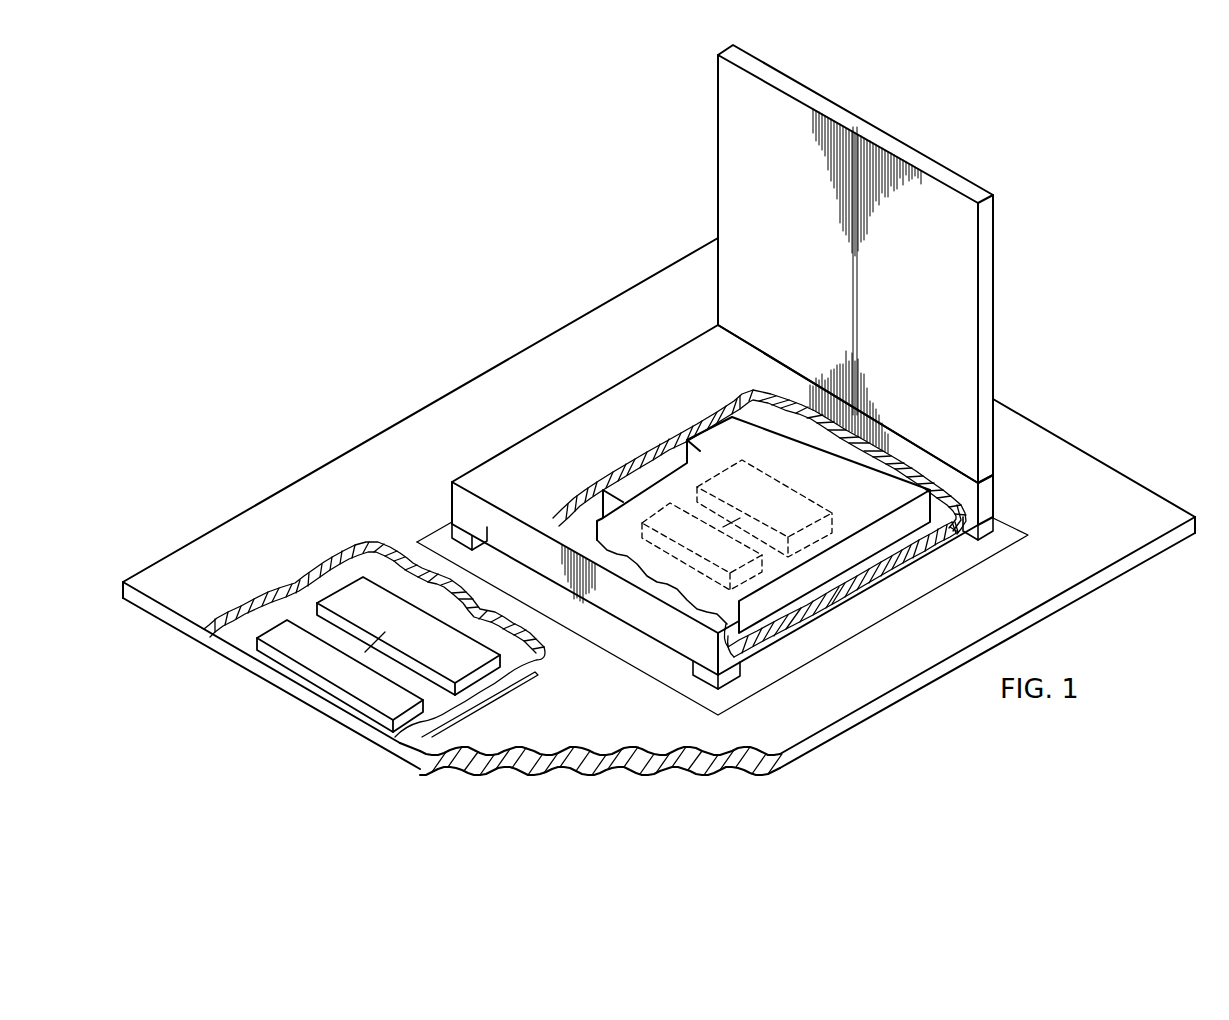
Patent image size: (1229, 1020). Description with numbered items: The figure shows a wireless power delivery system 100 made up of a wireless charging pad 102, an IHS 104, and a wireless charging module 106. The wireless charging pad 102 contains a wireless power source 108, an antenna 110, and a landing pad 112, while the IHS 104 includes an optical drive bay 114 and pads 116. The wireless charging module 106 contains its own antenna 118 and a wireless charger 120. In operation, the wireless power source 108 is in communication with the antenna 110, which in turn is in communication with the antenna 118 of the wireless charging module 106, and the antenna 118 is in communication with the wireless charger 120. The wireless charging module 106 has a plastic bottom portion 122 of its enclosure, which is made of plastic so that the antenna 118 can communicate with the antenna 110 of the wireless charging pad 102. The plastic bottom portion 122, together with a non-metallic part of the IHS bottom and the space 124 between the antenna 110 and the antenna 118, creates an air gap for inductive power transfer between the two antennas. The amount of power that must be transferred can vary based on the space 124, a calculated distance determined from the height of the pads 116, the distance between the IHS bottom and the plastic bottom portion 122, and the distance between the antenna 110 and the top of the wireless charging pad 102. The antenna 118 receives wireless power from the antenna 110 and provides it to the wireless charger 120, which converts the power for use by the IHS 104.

The wireless power delivery system 100 is at (486, 158).
The wireless charging pad 102 is at (350, 449).
The IHS 104 is at (442, 504).
The wireless charging module 106 is at (786, 418).
The wireless power source 108 is at (338, 580).
The antenna 110 is at (270, 628).
The landing pad 112 is at (1020, 483).
The optical drive bay 114 is at (783, 623).
The pads 116 is at (728, 690).
The antenna 118 is at (652, 513).
The wireless charger 120 is at (740, 460).
The plastic bottom portion 122 is at (962, 508).
The space 124 is at (480, 705).